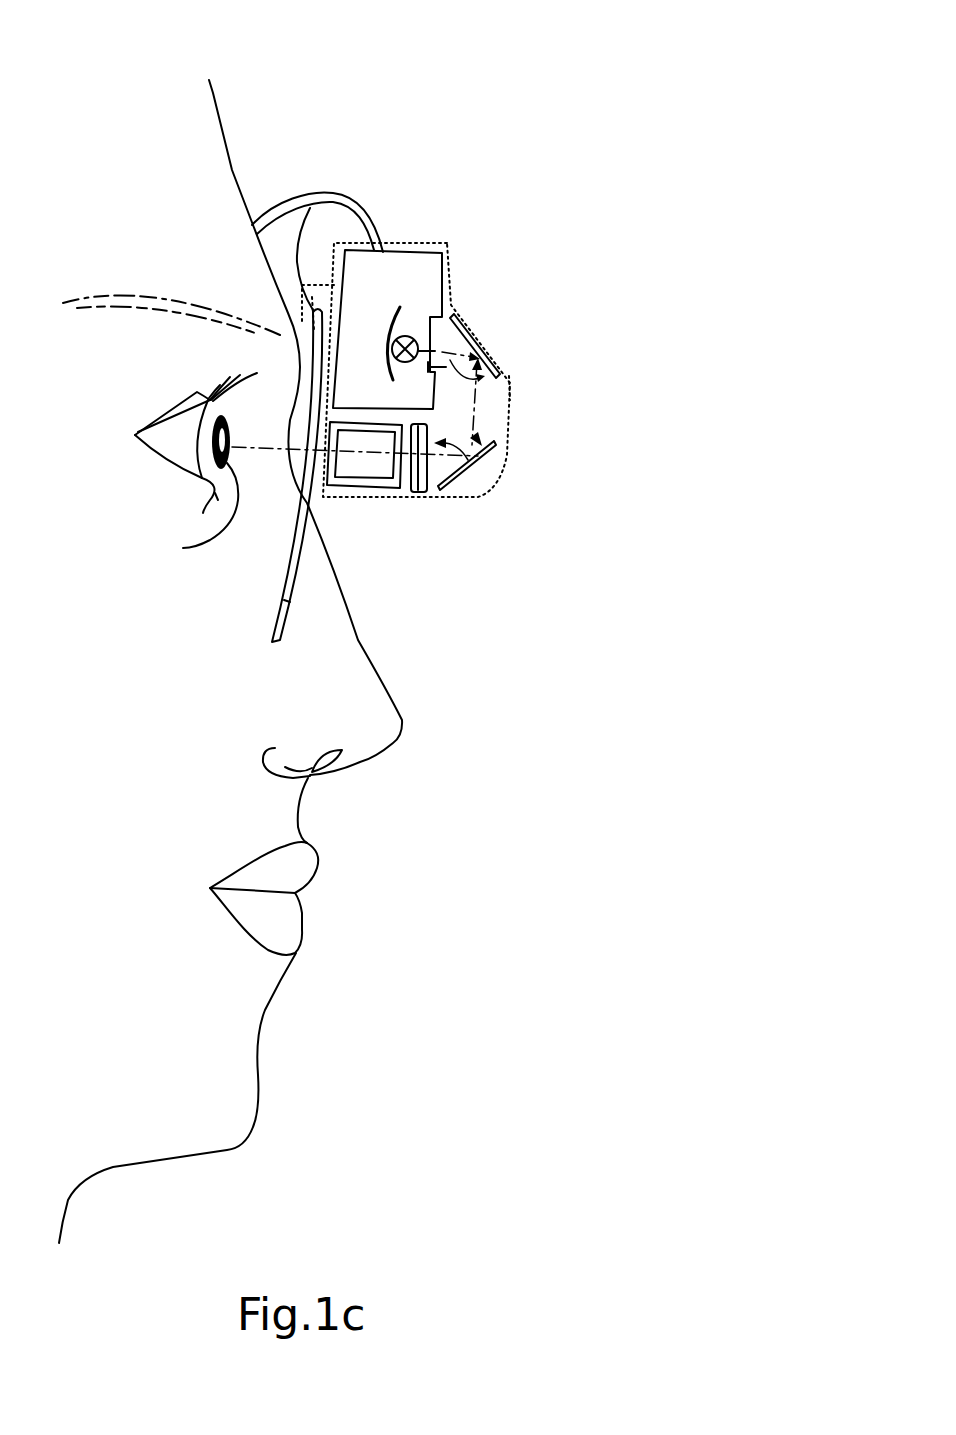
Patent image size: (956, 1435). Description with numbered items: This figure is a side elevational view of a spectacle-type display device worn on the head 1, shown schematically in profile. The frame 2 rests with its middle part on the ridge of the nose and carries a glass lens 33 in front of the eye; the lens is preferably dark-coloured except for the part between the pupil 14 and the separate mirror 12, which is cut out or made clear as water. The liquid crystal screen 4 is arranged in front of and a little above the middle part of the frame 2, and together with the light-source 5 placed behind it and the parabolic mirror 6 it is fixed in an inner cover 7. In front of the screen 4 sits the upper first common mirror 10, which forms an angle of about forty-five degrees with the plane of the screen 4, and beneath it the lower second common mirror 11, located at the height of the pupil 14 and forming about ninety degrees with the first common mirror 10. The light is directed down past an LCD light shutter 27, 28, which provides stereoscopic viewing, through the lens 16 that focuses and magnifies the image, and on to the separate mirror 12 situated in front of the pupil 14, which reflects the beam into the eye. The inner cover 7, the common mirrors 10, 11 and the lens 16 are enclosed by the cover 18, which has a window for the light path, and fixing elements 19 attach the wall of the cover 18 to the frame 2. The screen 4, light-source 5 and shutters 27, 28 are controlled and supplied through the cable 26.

The head 1 is at (218, 100).
The frame 2 is at (274, 612).
The screen 4 is at (430, 315).
The light-source 5 is at (483, 303).
The parabolic mirror 6 is at (387, 312).
The inner cover 7 is at (466, 316).
The first common mirror 10 is at (498, 347).
The second common mirror 11 is at (491, 500).
The separate mirror 12 is at (353, 476).
The pupil 14 is at (183, 548).
The lens 16 is at (393, 486).
The cover 18 is at (506, 394).
The fixing elements 19 is at (297, 262).
The cable 26 is at (288, 197).
The LCD light shutter 27 is at (417, 492).
The LCD light shutter 28 is at (501, 610).
The glass lens 33 is at (287, 600).